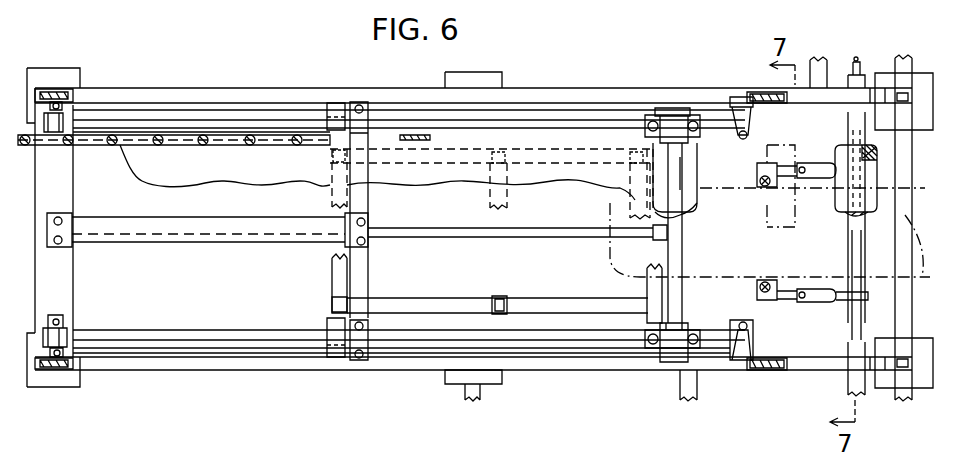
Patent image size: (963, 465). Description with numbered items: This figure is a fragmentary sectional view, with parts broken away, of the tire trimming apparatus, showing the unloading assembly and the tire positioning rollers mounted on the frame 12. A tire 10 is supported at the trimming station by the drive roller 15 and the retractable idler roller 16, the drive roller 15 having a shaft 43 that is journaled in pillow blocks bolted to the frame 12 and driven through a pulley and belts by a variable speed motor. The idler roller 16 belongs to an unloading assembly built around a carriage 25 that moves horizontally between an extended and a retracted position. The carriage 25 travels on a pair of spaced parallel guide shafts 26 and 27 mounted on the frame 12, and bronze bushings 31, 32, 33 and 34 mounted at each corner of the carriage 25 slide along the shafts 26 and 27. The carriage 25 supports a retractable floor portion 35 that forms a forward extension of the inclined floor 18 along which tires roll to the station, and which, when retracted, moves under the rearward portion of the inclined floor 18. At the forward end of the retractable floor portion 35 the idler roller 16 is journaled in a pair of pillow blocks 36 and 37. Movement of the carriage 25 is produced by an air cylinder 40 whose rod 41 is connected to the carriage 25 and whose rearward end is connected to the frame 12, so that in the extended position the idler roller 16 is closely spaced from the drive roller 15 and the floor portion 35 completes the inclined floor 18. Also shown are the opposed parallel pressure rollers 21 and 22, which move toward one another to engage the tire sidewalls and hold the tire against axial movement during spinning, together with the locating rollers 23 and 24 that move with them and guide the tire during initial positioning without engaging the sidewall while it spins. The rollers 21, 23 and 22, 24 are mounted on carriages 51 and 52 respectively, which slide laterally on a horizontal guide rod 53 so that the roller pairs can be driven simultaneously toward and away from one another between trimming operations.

The tire 10 is at (710, 188).
The frame 12 is at (527, 93).
The drive roller 15 is at (873, 162).
The retractable idler roller 16 is at (700, 195).
The inclined floor 18 is at (284, 175).
The pressure roller 21 is at (762, 281).
The pressure roller 22 is at (763, 188).
The locating roller 23 is at (812, 302).
The locating roller 24 is at (812, 165).
The carriage 25 is at (316, 295).
The guide shaft 26 is at (237, 340).
The guide shaft 27 is at (580, 123).
The bronze bushing 31 is at (335, 357).
The bronze bushing 32 is at (660, 357).
The bronze bushing 33 is at (333, 103).
The bronze bushing 34 is at (682, 108).
The retractable floor portion 35 is at (445, 180).
The pillow block 36 is at (675, 362).
The pillow block 37 is at (660, 125).
The air cylinder 40 is at (160, 232).
The rod 41 is at (425, 234).
The shaft 43 is at (850, 128).
The carriage 51 is at (870, 300).
The carriage 52 is at (878, 190).
The horizontal guide rod 53 is at (850, 272).